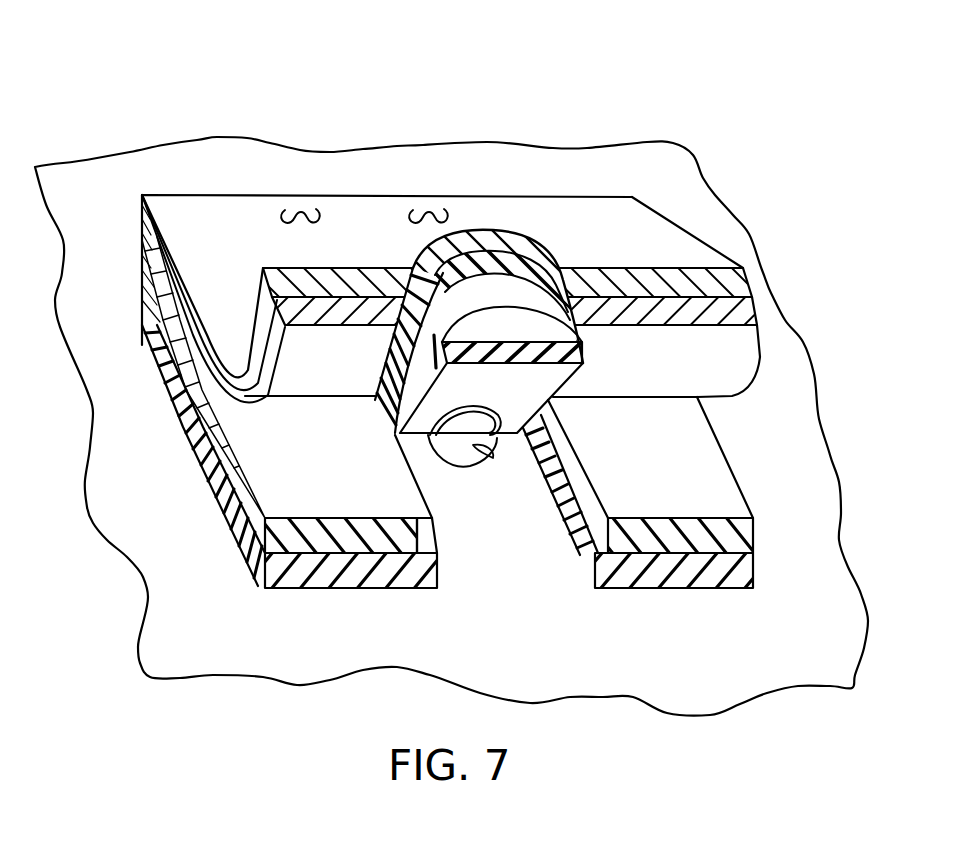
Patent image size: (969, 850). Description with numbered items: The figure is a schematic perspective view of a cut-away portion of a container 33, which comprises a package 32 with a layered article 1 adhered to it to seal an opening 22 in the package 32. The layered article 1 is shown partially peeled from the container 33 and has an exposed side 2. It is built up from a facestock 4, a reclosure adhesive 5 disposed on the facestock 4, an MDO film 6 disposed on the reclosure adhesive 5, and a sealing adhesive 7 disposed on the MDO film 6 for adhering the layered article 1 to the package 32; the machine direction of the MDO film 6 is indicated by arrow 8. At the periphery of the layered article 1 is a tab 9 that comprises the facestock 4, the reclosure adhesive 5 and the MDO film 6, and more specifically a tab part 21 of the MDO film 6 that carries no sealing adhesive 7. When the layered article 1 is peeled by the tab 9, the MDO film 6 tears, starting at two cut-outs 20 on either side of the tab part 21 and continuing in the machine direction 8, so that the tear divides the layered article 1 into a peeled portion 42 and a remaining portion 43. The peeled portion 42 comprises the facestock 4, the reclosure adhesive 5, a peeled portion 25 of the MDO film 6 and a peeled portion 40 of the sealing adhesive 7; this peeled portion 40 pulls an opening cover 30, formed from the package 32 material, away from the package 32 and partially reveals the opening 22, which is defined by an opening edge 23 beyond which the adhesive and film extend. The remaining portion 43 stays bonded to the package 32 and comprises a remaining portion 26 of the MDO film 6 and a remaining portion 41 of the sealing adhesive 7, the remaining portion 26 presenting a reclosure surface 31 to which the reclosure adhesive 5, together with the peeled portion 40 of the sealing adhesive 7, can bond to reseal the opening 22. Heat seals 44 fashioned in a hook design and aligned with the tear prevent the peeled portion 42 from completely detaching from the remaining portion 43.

The layered article 1 is at (176, 207).
The exposed side 2 is at (563, 205).
The facestock 4 is at (143, 214).
The reclosure adhesive 5 is at (143, 255).
The MDO film 6 is at (143, 292).
The sealing adhesive 7 is at (143, 336).
The arrow indicating machine direction 8 is at (176, 474).
The tab 9 is at (492, 218).
The cut-outs 20 is at (414, 505).
The tab part 21 is at (548, 326).
The opening 22 is at (480, 456).
The opening edge 23 is at (483, 468).
The peeled portion of the MDO film 25 is at (405, 360).
The remaining portion of the MDO film 26 is at (714, 534).
The opening cover 30 is at (466, 428).
The reclosure surface 31 is at (260, 444).
The package 32 is at (786, 348).
The container 33 is at (766, 70).
The peeled portion of the sealing adhesive 40 is at (529, 355).
The remaining portion of the sealing adhesive 41 is at (393, 578).
The peeled portion of the layered article 42 is at (766, 385).
The remaining portion of the layered article 43 is at (287, 620).
The heat seals 44 is at (307, 210).